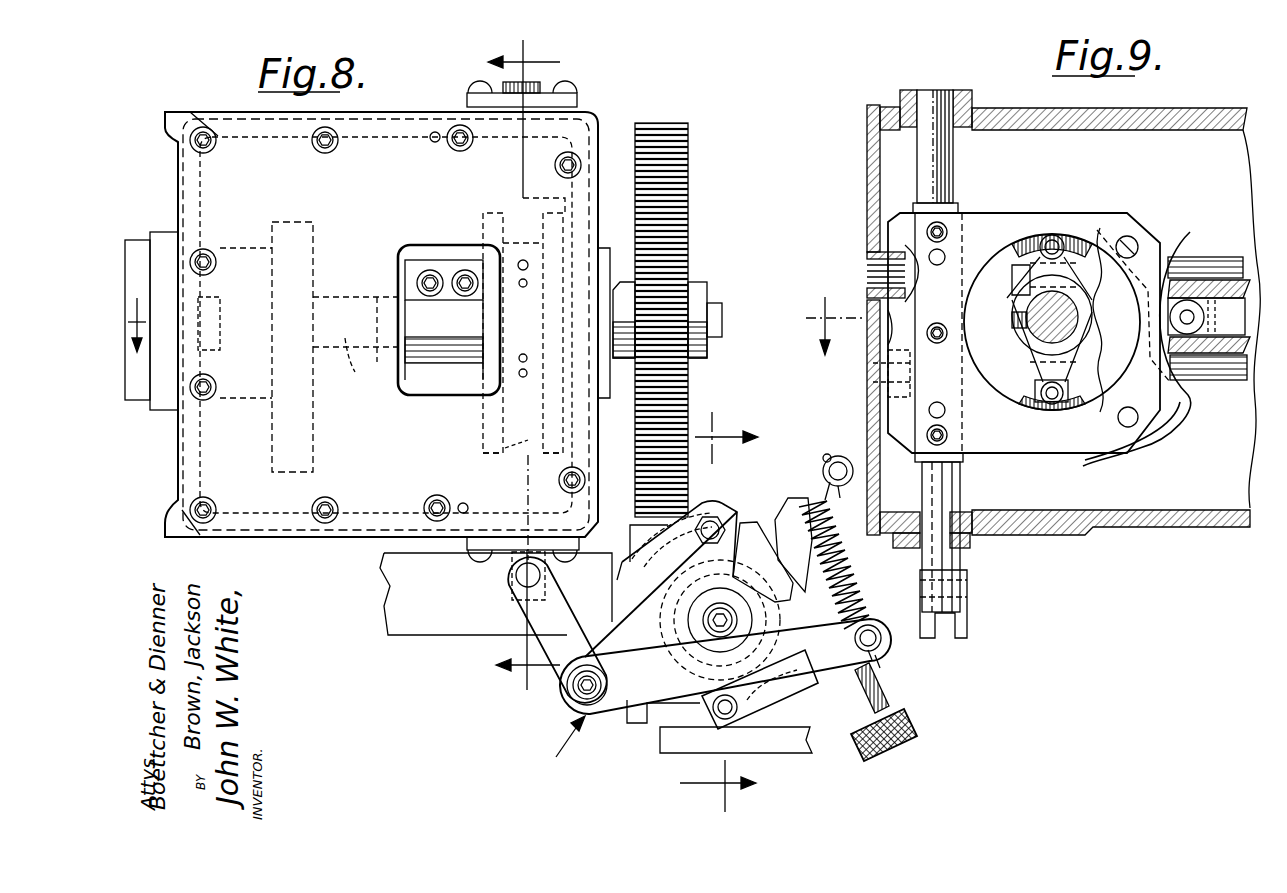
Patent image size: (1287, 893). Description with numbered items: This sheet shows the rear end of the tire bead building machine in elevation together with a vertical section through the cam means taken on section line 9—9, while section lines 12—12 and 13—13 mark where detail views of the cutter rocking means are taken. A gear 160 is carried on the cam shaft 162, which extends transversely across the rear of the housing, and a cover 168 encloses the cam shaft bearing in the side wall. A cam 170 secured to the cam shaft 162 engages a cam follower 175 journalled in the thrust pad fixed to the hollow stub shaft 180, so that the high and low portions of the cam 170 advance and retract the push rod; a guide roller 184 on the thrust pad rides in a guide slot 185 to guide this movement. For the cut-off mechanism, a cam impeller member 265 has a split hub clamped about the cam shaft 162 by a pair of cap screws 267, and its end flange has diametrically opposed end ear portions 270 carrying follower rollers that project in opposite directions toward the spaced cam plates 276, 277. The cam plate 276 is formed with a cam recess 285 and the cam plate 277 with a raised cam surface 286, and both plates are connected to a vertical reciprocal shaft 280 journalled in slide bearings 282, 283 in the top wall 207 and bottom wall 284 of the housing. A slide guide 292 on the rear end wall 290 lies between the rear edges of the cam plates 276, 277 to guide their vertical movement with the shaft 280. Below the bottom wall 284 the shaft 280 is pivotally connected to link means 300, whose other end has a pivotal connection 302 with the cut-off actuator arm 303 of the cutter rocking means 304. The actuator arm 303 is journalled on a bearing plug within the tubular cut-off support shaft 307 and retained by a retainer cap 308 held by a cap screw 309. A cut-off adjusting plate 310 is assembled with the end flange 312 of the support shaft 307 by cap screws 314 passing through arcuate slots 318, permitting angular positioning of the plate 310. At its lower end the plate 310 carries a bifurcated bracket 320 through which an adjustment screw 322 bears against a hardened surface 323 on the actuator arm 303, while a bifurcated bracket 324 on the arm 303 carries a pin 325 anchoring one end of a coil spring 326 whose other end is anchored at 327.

In FIG. 8, the section line 9— 9 is at (535, 372).
In FIG. 8, the section line 12- 12 is at (139, 314).
In FIG. 9, the section line 12- 12 is at (834, 315).
In FIG. 8, the section line 13- 13 is at (719, 605).
In FIG. 8, the gear 160 is at (688, 235).
In FIG. 8, the cam shaft 162 is at (353, 368).
In FIG. 9, the cam shaft 162 is at (1040, 298).
In FIG. 8, the cover 168 is at (143, 405).
In FIG. 8, the cam 170 is at (292, 222).
In FIG. 9, the cam 170 is at (1165, 420).
In FIG. 9, the cam follower 175 is at (1178, 270).
In FIG. 9, the hollow stub shaft 180 is at (1215, 262).
In FIG. 9, the guide roller 184 is at (1172, 320).
In FIG. 9, the guide slot 185 is at (1215, 330).
In FIG. 9, the top wall 207 is at (1190, 118).
In FIG. 8, the cam impeller member 265 is at (432, 270).
In FIG. 8, the cap screws 267 is at (462, 270).
In FIG. 9, the cap screws 267 is at (1030, 310).
In FIG. 9, the end ear portions 270 is at (1051, 235).
In FIG. 8, the cam plate 276 is at (504, 500).
In FIG. 9, the cam plate 276 is at (1100, 214).
In FIG. 8, the cam plate 277 is at (490, 437).
In FIG. 9, the cam plate 277 is at (1098, 228).
In FIG. 8, the vertical reciprocal shaft 280 is at (505, 88).
In FIG. 9, the vertical reciprocal shaft 280 is at (940, 153).
In FIG. 9, the slide bearing 282 is at (970, 92).
In FIG. 9, the slide bearing 283 is at (972, 515).
In FIG. 9, the bottom wall 284 is at (1065, 535).
In FIG. 9, the cam recess 285 is at (1037, 245).
In FIG. 9, the raised cam surface 286 is at (1055, 410).
In FIG. 9, the rear end wall 290 is at (866, 200).
In FIG. 8, the slide guide 292 is at (523, 240).
In FIG. 9, the slide guide 292 is at (892, 317).
In FIG. 8, the link means 300 is at (527, 640).
In FIG. 9, the link means 300 is at (968, 626).
In FIG. 8, the pivotal connection 302 is at (575, 700).
In FIG. 8, the cut-off actuator arm 303 is at (646, 708).
In FIG. 8, the cutter rocking means 304 is at (556, 747).
In FIG. 8, the tubular cut-off support shaft 307 is at (672, 660).
In FIG. 8, the retainer cap 308 is at (680, 740).
In FIG. 8, the cap screw 309 is at (700, 625).
In FIG. 8, the cut-off adjusting plate 310 is at (635, 588).
In FIG. 8, the end flange 312 is at (738, 500).
In FIG. 8, the cap screws 314 is at (710, 517).
In FIG. 8, the arcuate slots 318 is at (635, 575).
In FIG. 8, the bifurcated bracket 320 is at (885, 668).
In FIG. 8, the adjustment screw 322 is at (900, 712).
In FIG. 8, the hardened surface 323 is at (872, 626).
In FIG. 8, the bifurcated bracket 324 is at (841, 478).
In FIG. 8, the pin 325 is at (860, 448).
In FIG. 8, the coil spring 326 is at (850, 552).
In FIG. 8, the spring anchor 327 is at (882, 650).